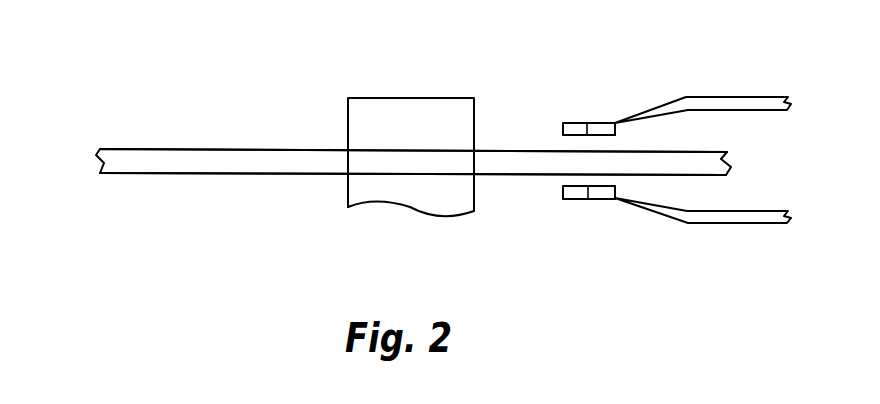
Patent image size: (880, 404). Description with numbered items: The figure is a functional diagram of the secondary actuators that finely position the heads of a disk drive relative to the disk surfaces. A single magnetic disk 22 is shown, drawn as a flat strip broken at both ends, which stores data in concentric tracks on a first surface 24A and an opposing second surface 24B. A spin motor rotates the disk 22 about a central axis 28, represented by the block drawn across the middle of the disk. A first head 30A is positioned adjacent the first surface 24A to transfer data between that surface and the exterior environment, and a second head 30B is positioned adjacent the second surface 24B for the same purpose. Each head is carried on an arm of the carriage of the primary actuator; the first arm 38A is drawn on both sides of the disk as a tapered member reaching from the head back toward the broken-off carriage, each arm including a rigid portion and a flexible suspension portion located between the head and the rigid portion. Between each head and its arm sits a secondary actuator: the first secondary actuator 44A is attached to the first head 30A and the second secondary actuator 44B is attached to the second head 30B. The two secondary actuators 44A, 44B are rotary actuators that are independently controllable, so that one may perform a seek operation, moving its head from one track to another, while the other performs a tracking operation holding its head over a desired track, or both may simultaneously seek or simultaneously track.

The magnetic disk 22 is at (243, 132).
The first surface 24A is at (165, 149).
The second surface 24B is at (143, 173).
The central axis 28 is at (412, 98).
The first head 30A is at (563, 128).
The second head 30B is at (563, 191).
The first arm 38A is at (717, 97).
The first secondary actuator 44A is at (602, 122).
The second secondary actuator 44B is at (602, 199).